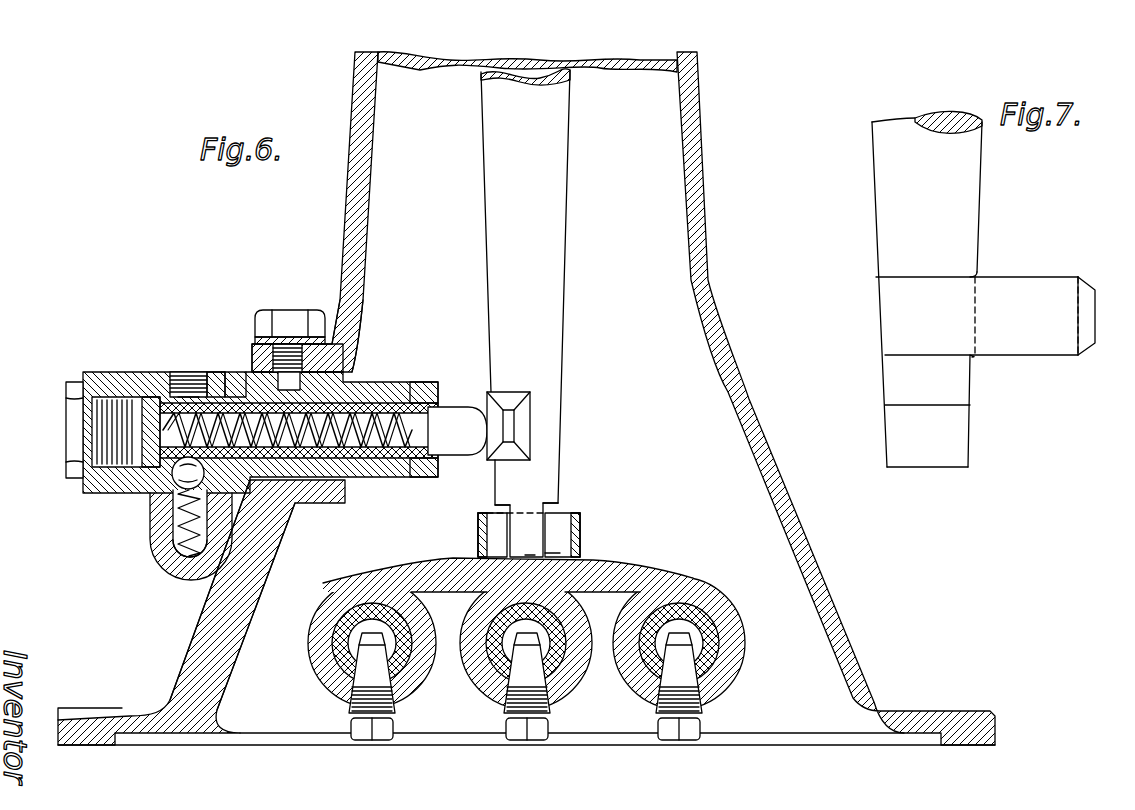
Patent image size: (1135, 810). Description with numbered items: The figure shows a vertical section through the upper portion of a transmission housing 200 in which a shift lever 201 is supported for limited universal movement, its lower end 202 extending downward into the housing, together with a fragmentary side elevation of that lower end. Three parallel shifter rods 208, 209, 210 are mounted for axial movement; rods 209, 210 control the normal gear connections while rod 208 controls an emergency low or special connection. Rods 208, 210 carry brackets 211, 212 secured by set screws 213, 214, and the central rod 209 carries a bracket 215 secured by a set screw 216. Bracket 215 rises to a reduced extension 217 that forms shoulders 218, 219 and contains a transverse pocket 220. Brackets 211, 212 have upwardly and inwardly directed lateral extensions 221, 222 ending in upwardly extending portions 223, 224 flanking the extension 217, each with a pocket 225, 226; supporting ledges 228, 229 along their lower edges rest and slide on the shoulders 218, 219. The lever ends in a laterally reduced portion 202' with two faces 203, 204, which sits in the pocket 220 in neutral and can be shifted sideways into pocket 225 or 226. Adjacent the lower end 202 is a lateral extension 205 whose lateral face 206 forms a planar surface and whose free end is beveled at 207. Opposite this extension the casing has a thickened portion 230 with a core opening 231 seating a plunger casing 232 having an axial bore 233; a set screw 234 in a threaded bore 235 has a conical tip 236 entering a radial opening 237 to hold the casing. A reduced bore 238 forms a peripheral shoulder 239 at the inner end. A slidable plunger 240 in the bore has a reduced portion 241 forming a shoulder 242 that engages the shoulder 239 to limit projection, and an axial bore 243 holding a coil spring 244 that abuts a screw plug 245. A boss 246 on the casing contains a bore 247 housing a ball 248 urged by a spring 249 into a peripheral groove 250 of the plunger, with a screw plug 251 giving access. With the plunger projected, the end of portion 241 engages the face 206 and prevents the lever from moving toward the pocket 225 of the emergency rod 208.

In FIG. 6, the transmission housing 200 is at (708, 282).
In FIG. 6, the shift lever 201 is at (567, 207).
In FIG. 7, the shift lever 201 is at (868, 148).
In FIG. 6, the lower end of shift lever 202 is at (551, 490).
In FIG. 7, the lower end of shift lever 202 is at (992, 332).
In FIG. 6, the laterally reduced portion 202' is at (500, 535).
In FIG. 7, the laterally reduced portion 202' is at (959, 456).
In FIG. 6, the face 203 is at (500, 510).
In FIG. 7, the face 203 is at (947, 433).
In FIG. 6, the face 204 is at (548, 501).
In FIG. 6, the lateral extension 205 is at (513, 418).
In FIG. 7, the lateral extension 205 is at (1028, 280).
In FIG. 7, the lateral face 206 is at (900, 325).
In FIG. 7, the beveled free end 207 is at (1088, 283).
In FIG. 6, the transmission shifter rod 208 is at (345, 638).
In FIG. 6, the transmission shifter rod 209 is at (582, 663).
In FIG. 6, the transmission shifter rod 210 is at (712, 653).
In FIG. 6, the bracket 211 is at (357, 597).
In FIG. 6, the bracket 212 is at (707, 588).
In FIG. 6, the set screw 213 is at (355, 713).
In FIG. 6, the set screw 214 is at (710, 704).
In FIG. 6, the bracket 215 is at (480, 680).
In FIG. 6, the set screw 216 is at (512, 720).
In FIG. 6, the reduced extension 217 is at (550, 555).
In FIG. 6, the shoulder 218 is at (410, 589).
In FIG. 6, the shoulder 219 is at (587, 580).
In FIG. 6, the transverse pocket 220 is at (533, 555).
In FIG. 6, the lateral extension 221 is at (478, 586).
In FIG. 6, the lateral extension 222 is at (620, 580).
In FIG. 6, the upwardly extending portion 223 is at (478, 527).
In FIG. 6, the upwardly extending portion 224 is at (555, 521).
In FIG. 6, the pocket 225 is at (487, 515).
In FIG. 6, the pocket 226 is at (560, 510).
In FIG. 6, the supporting ledge 228 is at (497, 580).
In FIG. 6, the supporting ledge 229 is at (530, 583).
In FIG. 6, the thickened portion 230 is at (350, 358).
In FIG. 6, the core opening 231 is at (275, 505).
In FIG. 6, the plunger casing 232 is at (373, 378).
In FIG. 6, the axial bore 233 is at (398, 402).
In FIG. 6, the set screw 234 is at (292, 311).
In FIG. 6, the transverse threaded bore 235 is at (262, 338).
In FIG. 6, the conical tip 236 is at (362, 326).
In FIG. 6, the radial opening 237 is at (367, 365).
In FIG. 6, the reduced bore 238 is at (432, 398).
In FIG. 6, the peripheral shoulder 239 is at (430, 384).
In FIG. 6, the slidable plunger 240 is at (199, 371).
In FIG. 6, the reduced portion 241 is at (452, 456).
In FIG. 6, the shoulder 242 is at (378, 478).
In FIG. 6, the axial bore 243 is at (235, 371).
In FIG. 6, the coil spring 244 is at (105, 396).
In FIG. 6, the screw plug 245 is at (66, 414).
In FIG. 6, the boss 246 is at (158, 545).
In FIG. 6, the bore 247 is at (180, 518).
In FIG. 6, the ball 248 is at (179, 484).
In FIG. 6, the spring 249 is at (193, 556).
In FIG. 6, the peripheral groove 250 is at (182, 394).
In FIG. 6, the screw plug 251 is at (178, 371).